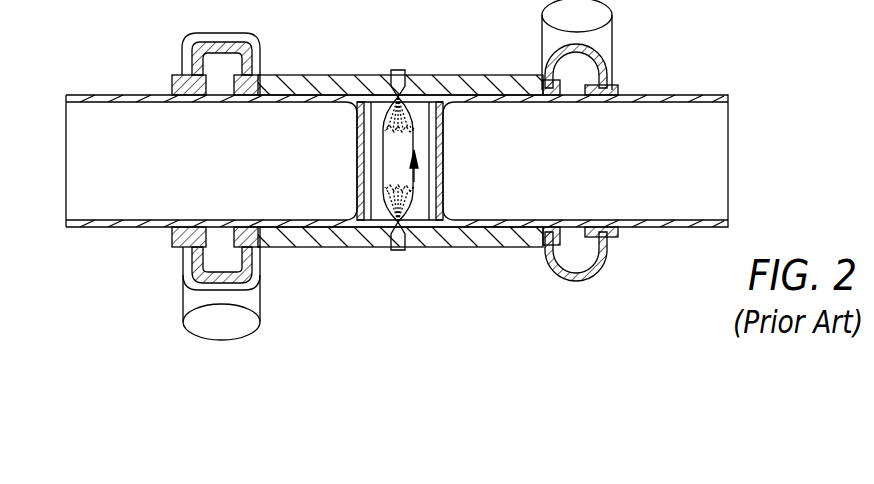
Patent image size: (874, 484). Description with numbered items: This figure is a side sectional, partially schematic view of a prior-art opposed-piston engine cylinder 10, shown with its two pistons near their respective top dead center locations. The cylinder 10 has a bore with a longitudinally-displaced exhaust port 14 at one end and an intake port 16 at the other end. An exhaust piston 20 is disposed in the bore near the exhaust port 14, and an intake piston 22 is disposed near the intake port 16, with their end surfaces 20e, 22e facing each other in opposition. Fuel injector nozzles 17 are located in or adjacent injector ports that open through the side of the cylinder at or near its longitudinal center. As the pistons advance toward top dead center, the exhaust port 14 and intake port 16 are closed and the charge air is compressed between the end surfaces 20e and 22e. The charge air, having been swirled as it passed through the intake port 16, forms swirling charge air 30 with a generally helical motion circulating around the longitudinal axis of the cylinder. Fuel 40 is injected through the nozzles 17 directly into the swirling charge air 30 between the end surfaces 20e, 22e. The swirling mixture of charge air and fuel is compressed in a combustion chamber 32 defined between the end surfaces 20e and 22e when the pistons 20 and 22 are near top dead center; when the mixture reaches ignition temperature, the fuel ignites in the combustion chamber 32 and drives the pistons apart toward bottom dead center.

The cylinder 10 is at (338, 246).
The exhaust port 14 is at (214, 233).
The intake port 16 is at (592, 232).
The fuel injector nozzles 17 is at (398, 70).
The exhaust piston 20 is at (122, 95).
The end surface of exhaust piston 20e is at (383, 122).
The intake piston 22 is at (700, 95).
The end surface of intake piston 22e is at (423, 193).
The swirling charge air 30 is at (404, 130).
The combustion chamber 32 is at (373, 218).
The fuel 40 is at (415, 130).